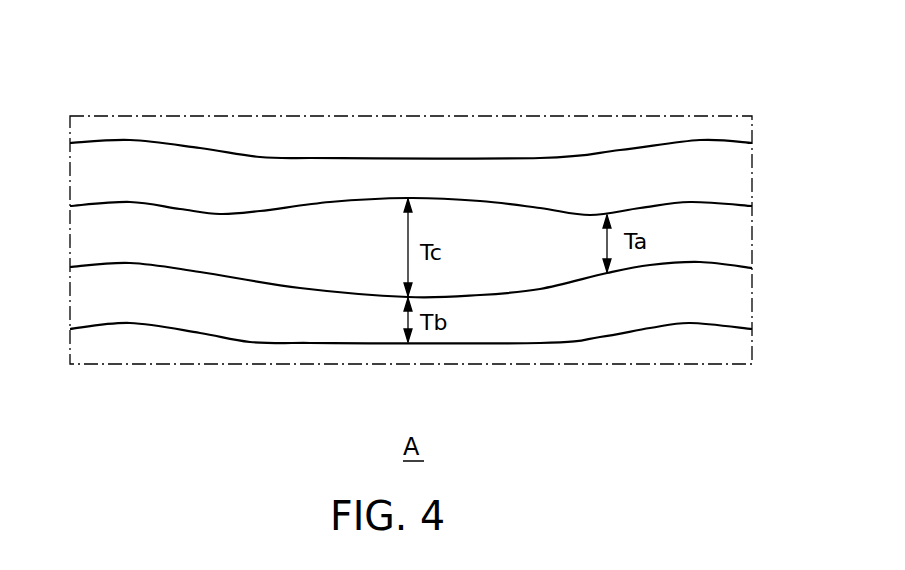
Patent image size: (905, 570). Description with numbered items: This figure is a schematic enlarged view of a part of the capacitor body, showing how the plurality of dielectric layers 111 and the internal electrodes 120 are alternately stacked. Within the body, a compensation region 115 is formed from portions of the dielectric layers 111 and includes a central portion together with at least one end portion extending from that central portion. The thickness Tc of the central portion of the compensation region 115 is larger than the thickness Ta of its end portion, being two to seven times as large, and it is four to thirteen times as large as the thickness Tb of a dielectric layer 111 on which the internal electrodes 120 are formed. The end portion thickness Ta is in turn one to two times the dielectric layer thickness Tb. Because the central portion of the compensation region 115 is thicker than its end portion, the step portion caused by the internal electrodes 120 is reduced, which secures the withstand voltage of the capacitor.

The dielectric layer 111 is at (462, 130).
The compensation region 115 is at (730, 240).
The internal electrode 120 is at (695, 325).